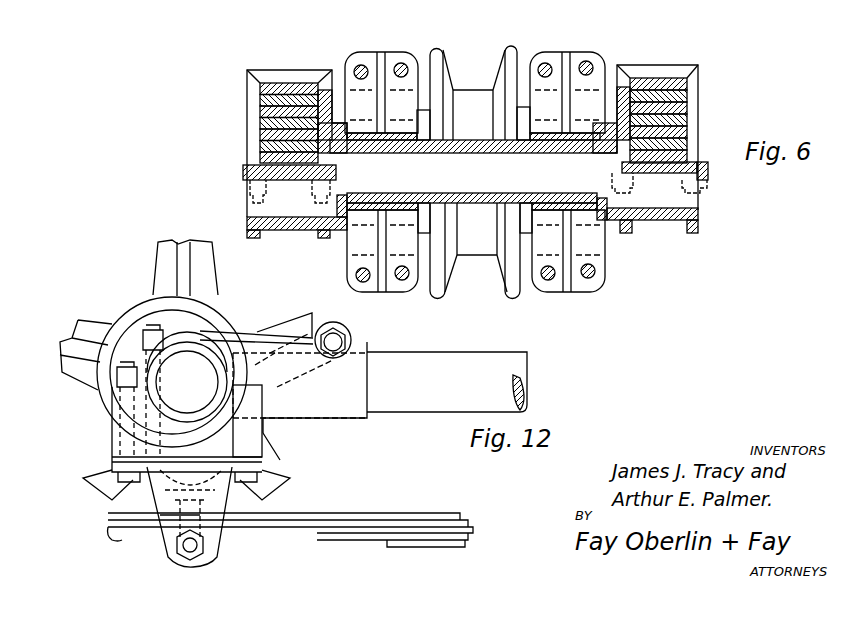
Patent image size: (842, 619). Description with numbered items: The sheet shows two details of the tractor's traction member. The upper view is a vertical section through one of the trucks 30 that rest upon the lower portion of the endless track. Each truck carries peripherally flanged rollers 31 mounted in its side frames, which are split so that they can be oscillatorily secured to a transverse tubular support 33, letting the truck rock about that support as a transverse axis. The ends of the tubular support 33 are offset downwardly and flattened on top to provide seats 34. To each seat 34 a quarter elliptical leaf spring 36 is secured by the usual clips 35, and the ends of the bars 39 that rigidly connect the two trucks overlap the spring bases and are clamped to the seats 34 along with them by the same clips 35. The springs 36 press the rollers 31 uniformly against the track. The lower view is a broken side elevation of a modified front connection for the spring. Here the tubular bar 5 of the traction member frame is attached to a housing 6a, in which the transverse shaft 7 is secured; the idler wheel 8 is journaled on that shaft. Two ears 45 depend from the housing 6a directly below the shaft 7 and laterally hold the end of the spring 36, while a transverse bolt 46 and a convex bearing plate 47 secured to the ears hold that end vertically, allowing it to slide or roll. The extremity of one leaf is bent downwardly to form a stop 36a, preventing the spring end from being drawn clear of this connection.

In FIG. 12, the tubular bar 5 is at (436, 408).
In FIG. 12, the housing 6a is at (315, 420).
In FIG. 12, the transverse shaft 7 is at (177, 355).
In FIG. 12, the idler wheel 8 is at (216, 278).
In FIG. 6, the truck 30 is at (385, 44).
In FIG. 6, the peripherally flanged roller 31 is at (440, 48).
In FIG. 6, the transverse tubular support 33 is at (463, 140).
In FIG. 6, the seat 34 is at (262, 165).
In FIG. 6, the clip 35 is at (262, 70).
In FIG. 6, the quarter elliptical leaf spring 36 is at (262, 121).
In FIG. 12, the quarter elliptical leaf spring 36 is at (397, 520).
In FIG. 12, the stop 36a is at (120, 541).
In FIG. 6, the bar 39 is at (292, 82).
In FIG. 12, the ear 45 is at (176, 562).
In FIG. 12, the transverse bolt 46 is at (197, 547).
In FIG. 12, the convex bearing plate 47 is at (160, 515).